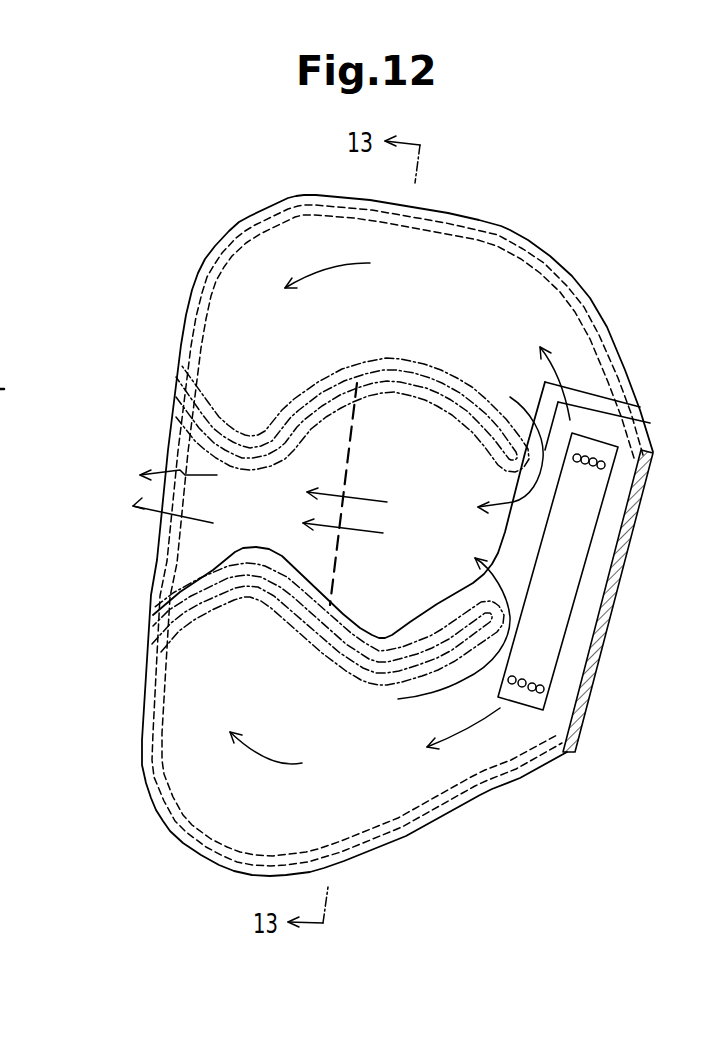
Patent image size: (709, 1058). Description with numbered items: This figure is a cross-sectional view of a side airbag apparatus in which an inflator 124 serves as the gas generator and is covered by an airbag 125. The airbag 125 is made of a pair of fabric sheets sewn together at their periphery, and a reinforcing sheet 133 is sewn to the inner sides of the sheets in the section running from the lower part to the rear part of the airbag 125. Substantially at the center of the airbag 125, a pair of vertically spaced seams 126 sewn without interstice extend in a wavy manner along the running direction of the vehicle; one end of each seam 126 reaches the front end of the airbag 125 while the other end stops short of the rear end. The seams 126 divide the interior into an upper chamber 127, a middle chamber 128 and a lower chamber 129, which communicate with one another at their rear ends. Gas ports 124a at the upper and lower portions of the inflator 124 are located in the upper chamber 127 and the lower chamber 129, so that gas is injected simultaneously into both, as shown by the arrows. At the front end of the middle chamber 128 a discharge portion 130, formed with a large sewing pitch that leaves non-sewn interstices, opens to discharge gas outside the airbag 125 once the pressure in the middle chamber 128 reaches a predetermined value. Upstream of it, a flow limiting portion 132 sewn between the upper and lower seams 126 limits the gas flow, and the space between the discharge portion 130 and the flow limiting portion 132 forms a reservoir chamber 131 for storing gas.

The inflator 124 is at (570, 557).
The gas ports 124a is at (587, 457).
The airbag 125 is at (246, 216).
The seams 126 is at (386, 364).
The upper chamber 127 is at (473, 262).
The middle chamber 128 is at (190, 543).
The lower chamber 129 is at (215, 813).
The discharge portion 130 is at (177, 448).
The reservoir chamber 131 is at (250, 487).
The flow limiting portion 132 is at (352, 440).
The reinforcing sheet 133 is at (592, 388).